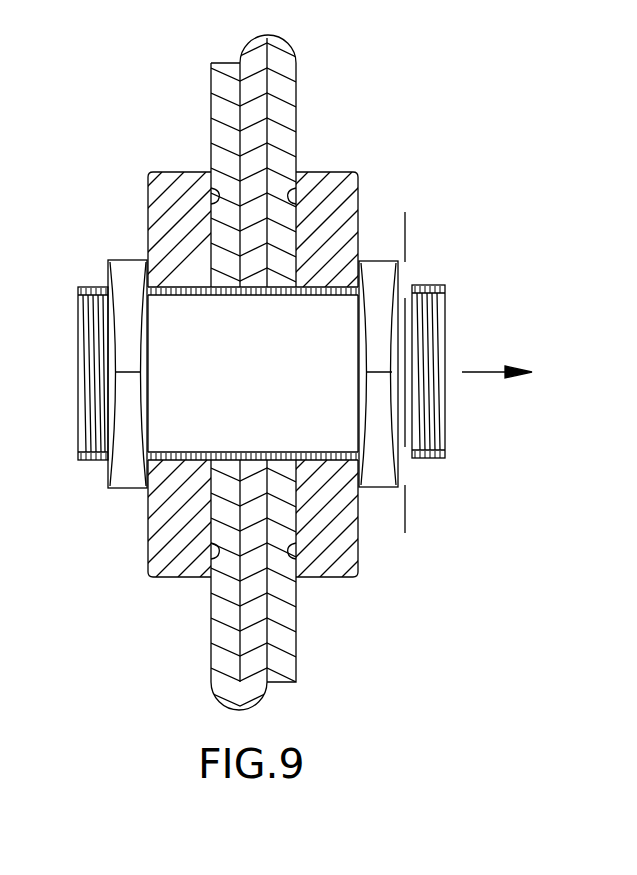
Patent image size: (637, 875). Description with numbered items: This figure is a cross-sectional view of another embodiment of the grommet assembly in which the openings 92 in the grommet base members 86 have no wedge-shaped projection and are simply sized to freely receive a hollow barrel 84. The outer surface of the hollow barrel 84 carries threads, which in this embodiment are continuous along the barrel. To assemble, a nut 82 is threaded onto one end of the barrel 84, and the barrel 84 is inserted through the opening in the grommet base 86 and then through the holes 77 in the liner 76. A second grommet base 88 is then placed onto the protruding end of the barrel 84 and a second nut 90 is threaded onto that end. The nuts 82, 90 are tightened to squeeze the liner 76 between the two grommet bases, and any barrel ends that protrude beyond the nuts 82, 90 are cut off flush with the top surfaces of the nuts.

The liner 76 is at (215, 643).
The holes in liner 77 is at (263, 287).
The nut 82 is at (122, 260).
The hollow barrel 84 is at (90, 287).
The grommet base member 86 is at (163, 171).
The second grommet base 88 is at (332, 171).
The second nut 90 is at (376, 261).
The openings in grommet base members 92 is at (177, 466).